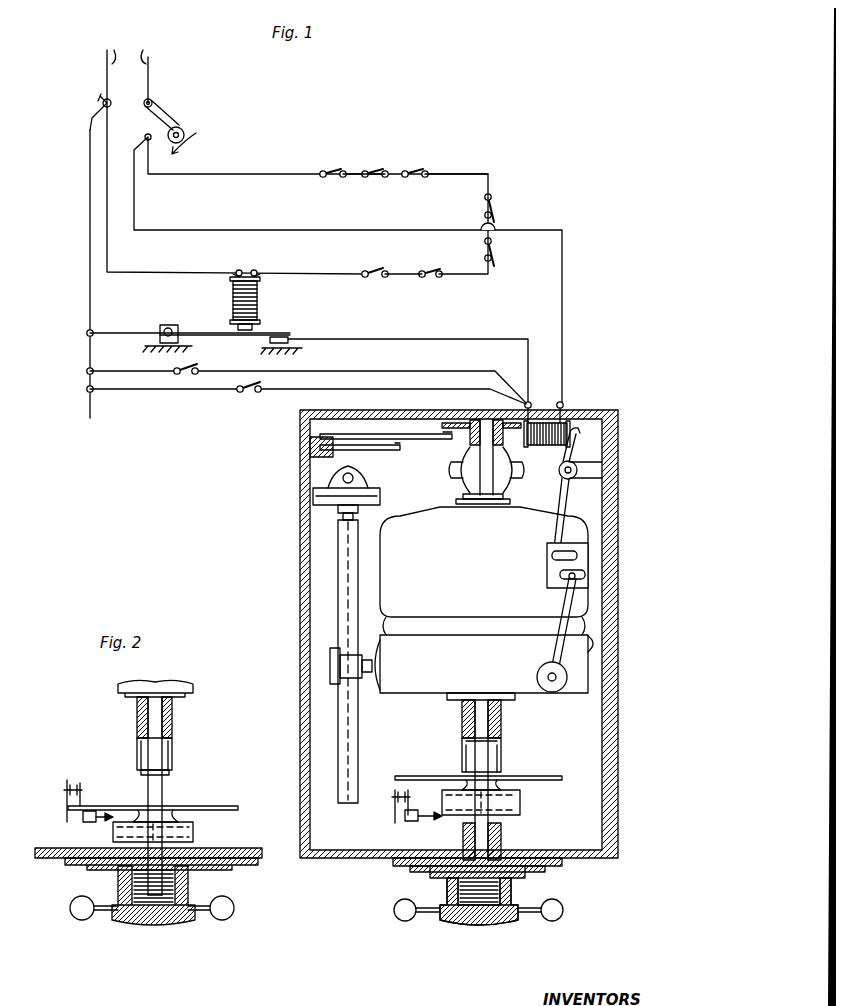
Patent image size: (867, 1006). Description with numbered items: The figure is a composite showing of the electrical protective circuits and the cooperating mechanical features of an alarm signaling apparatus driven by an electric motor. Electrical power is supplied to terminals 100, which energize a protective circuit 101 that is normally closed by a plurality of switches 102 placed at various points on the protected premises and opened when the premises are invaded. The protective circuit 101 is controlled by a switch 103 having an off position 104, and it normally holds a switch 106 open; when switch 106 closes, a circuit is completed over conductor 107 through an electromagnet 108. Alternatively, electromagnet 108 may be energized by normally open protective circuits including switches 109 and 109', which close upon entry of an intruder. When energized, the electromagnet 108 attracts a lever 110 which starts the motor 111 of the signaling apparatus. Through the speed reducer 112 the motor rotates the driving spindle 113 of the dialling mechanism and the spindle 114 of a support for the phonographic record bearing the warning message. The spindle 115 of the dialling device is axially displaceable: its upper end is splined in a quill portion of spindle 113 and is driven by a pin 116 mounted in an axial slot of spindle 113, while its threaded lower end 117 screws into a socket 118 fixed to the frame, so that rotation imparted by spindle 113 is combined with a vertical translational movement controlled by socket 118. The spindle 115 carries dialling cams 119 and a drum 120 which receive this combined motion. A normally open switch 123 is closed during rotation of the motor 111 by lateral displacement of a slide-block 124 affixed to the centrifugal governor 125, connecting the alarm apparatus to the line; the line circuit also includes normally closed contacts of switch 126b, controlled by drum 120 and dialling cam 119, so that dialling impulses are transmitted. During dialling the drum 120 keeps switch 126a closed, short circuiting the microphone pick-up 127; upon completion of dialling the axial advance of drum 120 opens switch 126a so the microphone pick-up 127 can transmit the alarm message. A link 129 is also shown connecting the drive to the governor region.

In FIG. 1, the terminals 100 is at (326, 218).
In FIG. 1, the protective circuit 101 is at (466, 180).
In FIG. 1, the switches 102 is at (328, 164).
In FIG. 1, the switch 103 is at (170, 118).
In FIG. 1, the off position 104 is at (168, 124).
In FIG. 1, the switch 106 is at (292, 330).
In FIG. 1, the conductor 107 is at (504, 338).
In FIG. 1, the electromagnet 108 is at (554, 415).
In FIG. 1, the switch 109 is at (306, 366).
In FIG. 1, the switch 109' is at (306, 388).
In FIG. 1, the lever 110 is at (560, 490).
In FIG. 1, the motor 111 is at (442, 578).
In FIG. 1, the speed reducer 112 is at (436, 684).
In FIG. 2, the speed reducer 112 is at (165, 681).
In FIG. 1, the driving spindle 113 is at (502, 725).
In FIG. 2, the driving spindle 113 is at (174, 719).
In FIG. 1, the spindle 114 is at (326, 655).
In FIG. 1, the spindle 115 is at (490, 758).
In FIG. 2, the spindle 115 is at (163, 792).
In FIG. 1, the pin 116 is at (460, 747).
In FIG. 2, the pin 116 is at (172, 776).
In FIG. 1, the lower end 117 is at (503, 842).
In FIG. 2, the lower end 117 is at (155, 918).
In FIG. 1, the socket 118 is at (520, 888).
In FIG. 2, the socket 118 is at (190, 888).
In FIG. 1, the dialling cam 119 is at (548, 778).
In FIG. 2, the dialling cam 119 is at (236, 806).
In FIG. 1, the drum 120 is at (522, 803).
In FIG. 2, the drum 120 is at (196, 834).
In FIG. 1, the switch 123 is at (375, 436).
In FIG. 1, the slide-block 124 is at (468, 440).
In FIG. 1, the centrifugal governor 125 is at (457, 482).
In FIG. 1, the switch 126a is at (426, 824).
In FIG. 2, the switch 126a is at (88, 824).
In FIG. 1, the switch 126b is at (395, 812).
In FIG. 2, the switch 126b is at (80, 768).
In FIG. 1, the microphone pick-up 127 is at (362, 490).
In FIG. 1, the link 129 is at (542, 655).